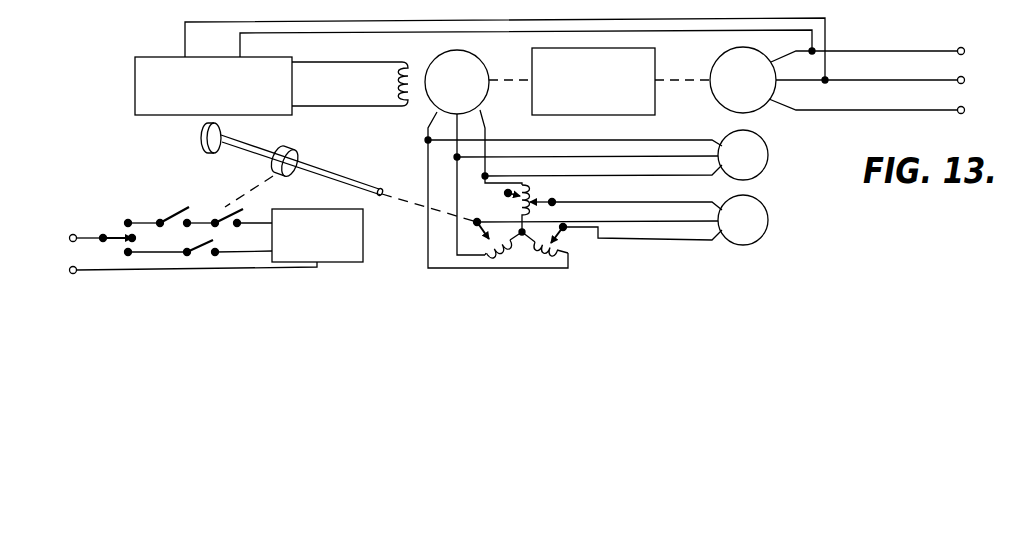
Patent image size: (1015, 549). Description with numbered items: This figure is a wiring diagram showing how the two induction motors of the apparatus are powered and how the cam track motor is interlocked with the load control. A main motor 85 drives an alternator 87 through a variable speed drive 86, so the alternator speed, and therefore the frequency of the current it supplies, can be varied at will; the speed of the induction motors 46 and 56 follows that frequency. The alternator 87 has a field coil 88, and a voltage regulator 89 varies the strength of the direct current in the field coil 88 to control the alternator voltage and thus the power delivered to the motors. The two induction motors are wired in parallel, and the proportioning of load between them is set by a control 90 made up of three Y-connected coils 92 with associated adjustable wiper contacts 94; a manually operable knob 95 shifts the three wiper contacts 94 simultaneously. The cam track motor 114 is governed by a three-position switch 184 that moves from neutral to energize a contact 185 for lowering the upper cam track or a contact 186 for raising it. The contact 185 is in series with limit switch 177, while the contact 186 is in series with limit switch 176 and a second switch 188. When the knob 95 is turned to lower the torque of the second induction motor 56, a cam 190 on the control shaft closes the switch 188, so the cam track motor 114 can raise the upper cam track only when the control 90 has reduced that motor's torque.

The voltage regulator 89 is at (153, 56).
The field coil 88 is at (397, 79).
The alternator 87 is at (479, 57).
The variable speed drive 86 is at (655, 55).
The main motor 85 is at (764, 106).
The induction motor 46 is at (768, 158).
The second induction motor 56 is at (766, 211).
The control 90 is at (243, 141).
The knob 95 is at (203, 141).
The cam 190 is at (300, 156).
The wiper contacts 94 is at (538, 201).
The Y-connected coils 92 is at (518, 203).
The cam track motor 114 is at (363, 237).
The three-position switch 184 is at (102, 234).
The contact 185 is at (126, 252).
The contact 186 is at (128, 221).
The limit switch 176 is at (170, 214).
The second switch 188 is at (220, 217).
The limit switch 177 is at (208, 245).